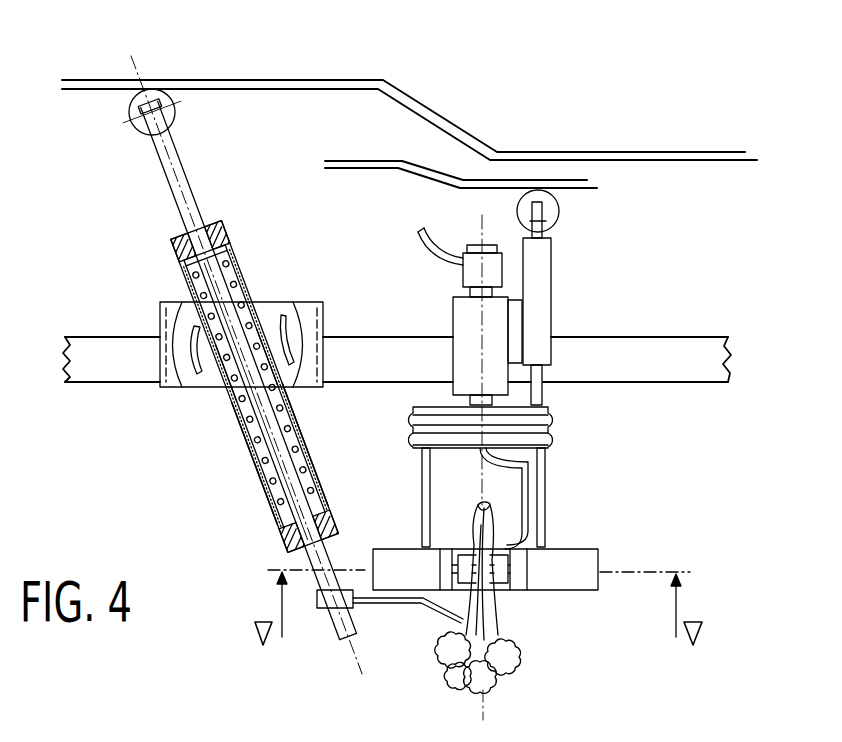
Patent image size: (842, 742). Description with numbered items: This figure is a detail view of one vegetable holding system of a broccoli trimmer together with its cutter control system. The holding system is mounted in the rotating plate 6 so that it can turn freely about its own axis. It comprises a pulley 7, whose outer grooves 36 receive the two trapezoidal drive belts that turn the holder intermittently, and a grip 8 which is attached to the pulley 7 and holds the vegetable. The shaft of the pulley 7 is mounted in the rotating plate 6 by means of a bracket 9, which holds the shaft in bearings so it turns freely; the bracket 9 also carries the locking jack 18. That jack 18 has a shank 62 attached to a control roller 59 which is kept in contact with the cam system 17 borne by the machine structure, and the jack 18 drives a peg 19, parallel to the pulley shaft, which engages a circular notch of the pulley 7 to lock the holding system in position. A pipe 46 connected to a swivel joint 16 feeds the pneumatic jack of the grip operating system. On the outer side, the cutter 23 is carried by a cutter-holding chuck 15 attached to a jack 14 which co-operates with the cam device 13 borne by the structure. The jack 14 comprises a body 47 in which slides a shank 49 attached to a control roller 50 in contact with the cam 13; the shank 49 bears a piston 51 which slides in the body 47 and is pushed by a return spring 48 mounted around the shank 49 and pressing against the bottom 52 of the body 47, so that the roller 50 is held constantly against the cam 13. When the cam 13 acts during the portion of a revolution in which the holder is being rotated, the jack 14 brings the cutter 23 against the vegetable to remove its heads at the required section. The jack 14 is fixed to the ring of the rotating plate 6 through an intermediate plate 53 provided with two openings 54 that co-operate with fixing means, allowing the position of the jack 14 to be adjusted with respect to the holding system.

The rotating plate 6 is at (664, 352).
The pulley 7 is at (550, 425).
The grip 8 is at (572, 595).
The bracket 9 is at (462, 321).
The cam device 13 is at (305, 80).
The jack 14 is at (234, 452).
The cutter-holding chuck 15 is at (324, 609).
The swivel joint 16 is at (470, 264).
The cam system 17 is at (452, 180).
The jack 18 is at (538, 268).
The peg 19 is at (543, 373).
The cutter 23 is at (387, 604).
The grooves 36 is at (412, 430).
The pipe 46 is at (532, 498).
The body 47 is at (262, 487).
The return spring 48 is at (281, 398).
The shank 49 is at (222, 296).
The control roller 50 is at (141, 128).
The piston 51 is at (183, 272).
The bottom 52 is at (282, 539).
The intermediate plate 53 is at (211, 378).
The openings 54 is at (288, 322).
The control roller 59 is at (546, 219).
The shank 62 is at (541, 222).